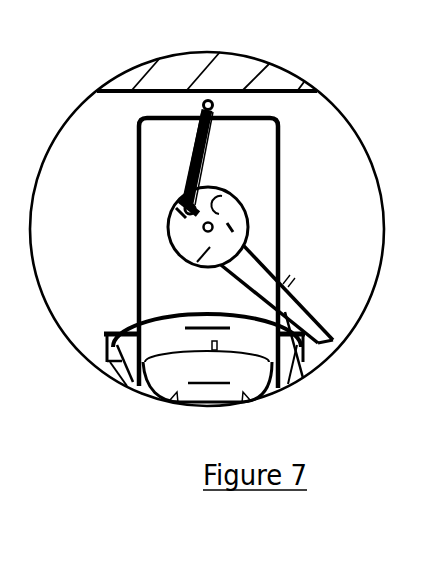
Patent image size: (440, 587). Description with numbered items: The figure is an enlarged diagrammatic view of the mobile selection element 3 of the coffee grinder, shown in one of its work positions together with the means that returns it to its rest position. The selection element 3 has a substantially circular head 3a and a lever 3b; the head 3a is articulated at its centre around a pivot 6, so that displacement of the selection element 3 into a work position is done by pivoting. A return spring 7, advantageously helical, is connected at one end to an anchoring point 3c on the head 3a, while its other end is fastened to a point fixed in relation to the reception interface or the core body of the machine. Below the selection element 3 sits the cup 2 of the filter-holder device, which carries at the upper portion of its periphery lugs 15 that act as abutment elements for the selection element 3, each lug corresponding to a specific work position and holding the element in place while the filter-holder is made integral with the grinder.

The cup 2 is at (178, 315).
The selection element 3 is at (288, 280).
The head 3a is at (170, 228).
The lever 3b is at (322, 322).
The anchoring point 3c is at (180, 213).
The pivot 6 is at (248, 217).
The return spring 7 is at (215, 153).
The lugs 15 is at (112, 362).